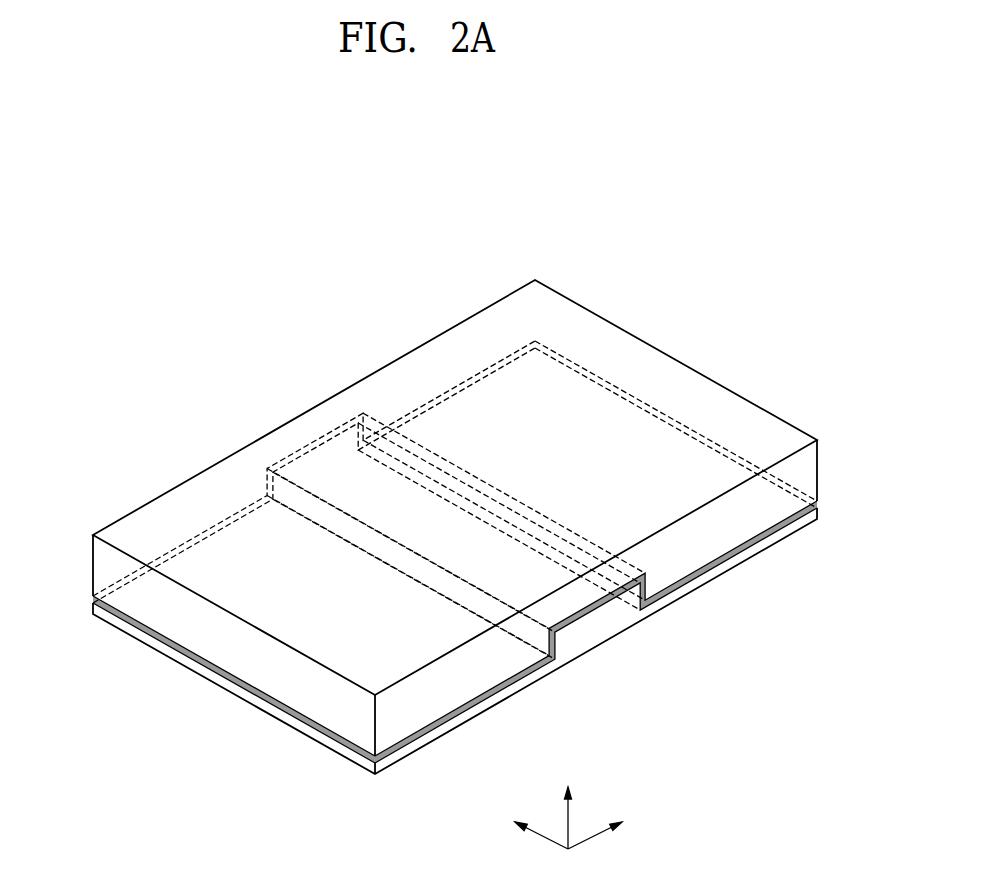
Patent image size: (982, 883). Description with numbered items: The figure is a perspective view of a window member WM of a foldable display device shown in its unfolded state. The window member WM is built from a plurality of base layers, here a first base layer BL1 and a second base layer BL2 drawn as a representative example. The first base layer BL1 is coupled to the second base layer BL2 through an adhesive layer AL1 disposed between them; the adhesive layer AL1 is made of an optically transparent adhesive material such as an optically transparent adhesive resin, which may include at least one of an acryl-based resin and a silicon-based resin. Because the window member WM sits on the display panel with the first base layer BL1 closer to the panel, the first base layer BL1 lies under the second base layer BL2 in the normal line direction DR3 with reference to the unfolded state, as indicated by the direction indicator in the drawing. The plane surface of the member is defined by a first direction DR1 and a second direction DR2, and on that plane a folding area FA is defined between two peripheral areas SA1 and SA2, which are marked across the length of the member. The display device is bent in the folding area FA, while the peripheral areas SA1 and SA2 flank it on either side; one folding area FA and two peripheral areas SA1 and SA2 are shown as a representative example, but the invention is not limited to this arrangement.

The window member WM is at (438, 479).
The first base layer BL1 is at (290, 717).
The second base layer BL2 is at (207, 622).
The adhesive layer AL1 is at (230, 678).
The folding area FA is at (331, 362).
The peripheral area SA1 is at (235, 417).
The peripheral area SA2 is at (535, 280).
The first direction DR1 is at (614, 829).
The second direction DR2 is at (523, 829).
The normal line direction DR3 is at (568, 807).